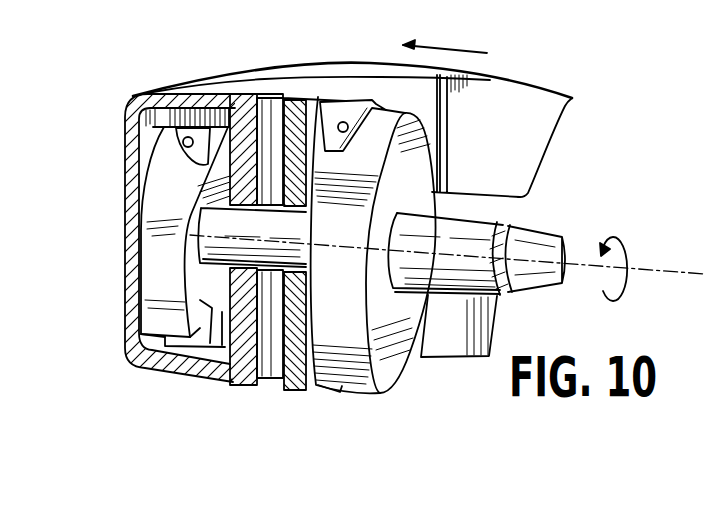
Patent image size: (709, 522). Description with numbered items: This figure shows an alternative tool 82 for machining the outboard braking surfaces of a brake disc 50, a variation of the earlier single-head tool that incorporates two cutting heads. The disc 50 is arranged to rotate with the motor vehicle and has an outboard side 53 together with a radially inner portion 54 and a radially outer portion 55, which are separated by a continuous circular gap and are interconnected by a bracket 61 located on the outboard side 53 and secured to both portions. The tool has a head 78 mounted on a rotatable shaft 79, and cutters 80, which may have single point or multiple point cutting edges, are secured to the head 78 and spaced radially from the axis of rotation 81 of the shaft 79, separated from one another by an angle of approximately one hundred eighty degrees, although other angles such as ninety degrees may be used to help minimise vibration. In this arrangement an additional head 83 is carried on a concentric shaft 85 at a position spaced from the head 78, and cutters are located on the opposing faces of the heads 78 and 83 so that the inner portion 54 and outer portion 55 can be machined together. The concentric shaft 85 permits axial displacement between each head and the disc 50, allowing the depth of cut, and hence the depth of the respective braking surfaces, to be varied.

The disc 50 is at (518, 64).
The outboard side 53 is at (182, 294).
The radially inner portion 54 is at (442, 334).
The radially outer portion 55 is at (548, 114).
The bracket 61 is at (123, 122).
The head 78 is at (140, 200).
The rotatable shaft 79 is at (471, 243).
The cutters 80 is at (194, 135).
The axis of rotation 81 is at (626, 258).
The alternative tool 82 is at (446, 145).
The additional head 83 is at (349, 320).
The concentric shaft 85 is at (540, 250).